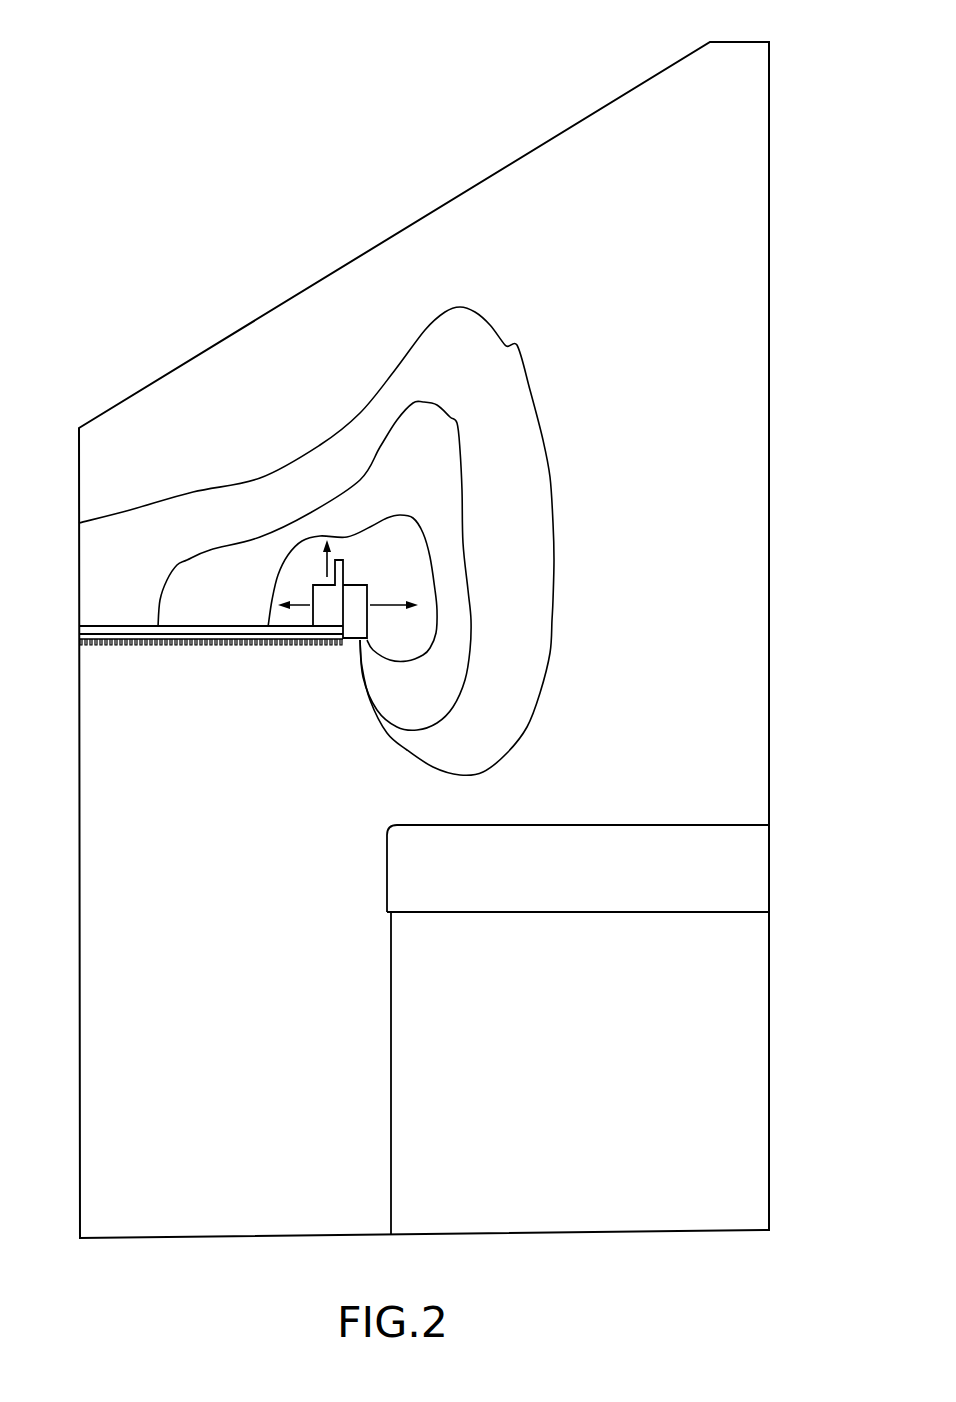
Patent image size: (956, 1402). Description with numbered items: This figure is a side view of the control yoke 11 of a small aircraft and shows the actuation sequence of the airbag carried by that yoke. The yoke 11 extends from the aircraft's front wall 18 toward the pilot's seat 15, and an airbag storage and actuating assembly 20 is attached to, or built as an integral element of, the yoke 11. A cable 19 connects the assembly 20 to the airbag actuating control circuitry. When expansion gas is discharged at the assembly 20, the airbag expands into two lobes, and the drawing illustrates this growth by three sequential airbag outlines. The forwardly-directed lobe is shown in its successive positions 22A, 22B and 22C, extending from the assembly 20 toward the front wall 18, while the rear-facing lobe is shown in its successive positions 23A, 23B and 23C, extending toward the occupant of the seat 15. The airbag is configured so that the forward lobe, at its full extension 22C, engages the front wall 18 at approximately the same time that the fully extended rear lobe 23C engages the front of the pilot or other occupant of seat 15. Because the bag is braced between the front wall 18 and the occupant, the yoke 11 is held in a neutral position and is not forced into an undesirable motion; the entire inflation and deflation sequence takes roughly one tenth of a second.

The control yoke 11 is at (237, 650).
The seat 15 is at (600, 843).
The front wall 18 is at (79, 442).
The cable 19 is at (143, 643).
The airbag storage and actuating assembly 20 is at (357, 627).
The first sequential position of forwardly-directed lobe 22A is at (273, 597).
The second sequential position of forwardly-directed lobe 22B is at (185, 562).
The third sequential position of forwardly-directed lobe 22C is at (193, 492).
The first sequential position of rear-facing lobe 23A is at (433, 468).
The second sequential position of rear-facing lobe 23B is at (483, 372).
The third sequential position of rear-facing lobe 23C is at (552, 495).